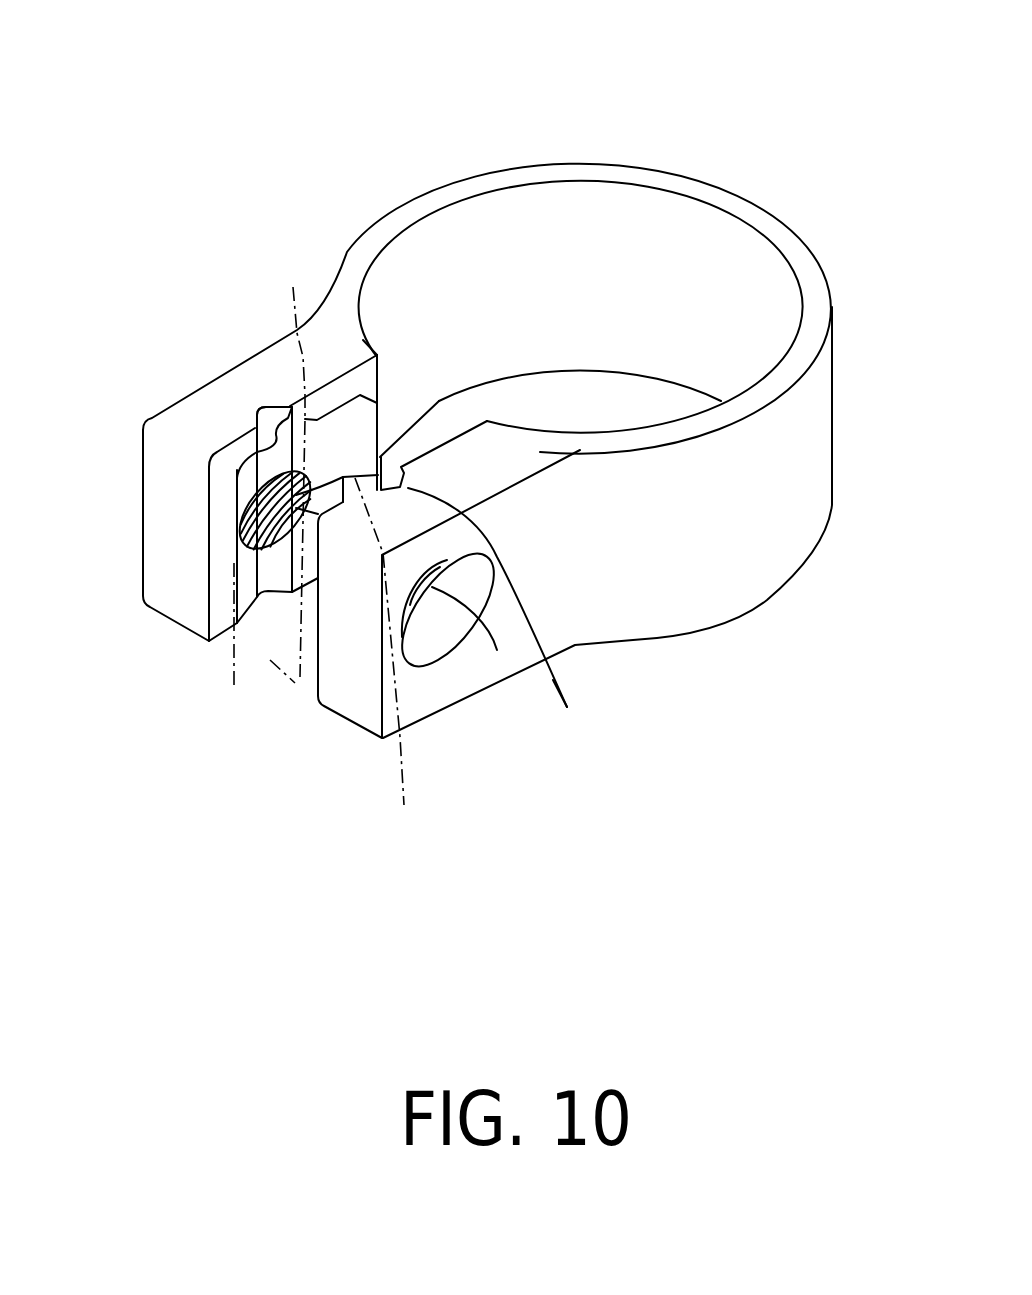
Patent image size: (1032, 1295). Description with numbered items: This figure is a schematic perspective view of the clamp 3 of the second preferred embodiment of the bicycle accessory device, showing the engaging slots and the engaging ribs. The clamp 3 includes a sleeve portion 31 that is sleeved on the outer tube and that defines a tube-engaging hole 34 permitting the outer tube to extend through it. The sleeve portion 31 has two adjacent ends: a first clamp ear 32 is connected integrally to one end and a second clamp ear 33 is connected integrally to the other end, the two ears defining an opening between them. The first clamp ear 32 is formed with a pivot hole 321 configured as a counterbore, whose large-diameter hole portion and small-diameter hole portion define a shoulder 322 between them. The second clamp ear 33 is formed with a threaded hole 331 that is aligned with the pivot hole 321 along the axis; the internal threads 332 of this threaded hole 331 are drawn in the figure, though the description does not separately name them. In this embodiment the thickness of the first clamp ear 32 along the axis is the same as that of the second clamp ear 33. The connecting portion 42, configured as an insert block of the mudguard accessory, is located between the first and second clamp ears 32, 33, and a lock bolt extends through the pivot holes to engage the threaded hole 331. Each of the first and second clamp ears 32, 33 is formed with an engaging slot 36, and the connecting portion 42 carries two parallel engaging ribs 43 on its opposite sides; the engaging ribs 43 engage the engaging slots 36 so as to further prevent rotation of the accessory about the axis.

The clamp 3 is at (487, 248).
The sleeve portion 31 is at (595, 373).
The first clamp ear 32 is at (438, 639).
The second clamp ear 33 is at (203, 490).
The tube-engaging hole 34 is at (651, 335).
The engaging slot 36 is at (400, 519).
The connecting portion 42 is at (197, 633).
The engaging ribs 43 is at (362, 553).
The pivot hole 321 is at (448, 676).
The shoulder 322 is at (489, 677).
The threaded hole 331 is at (188, 510).
The threads 332 is at (187, 514).